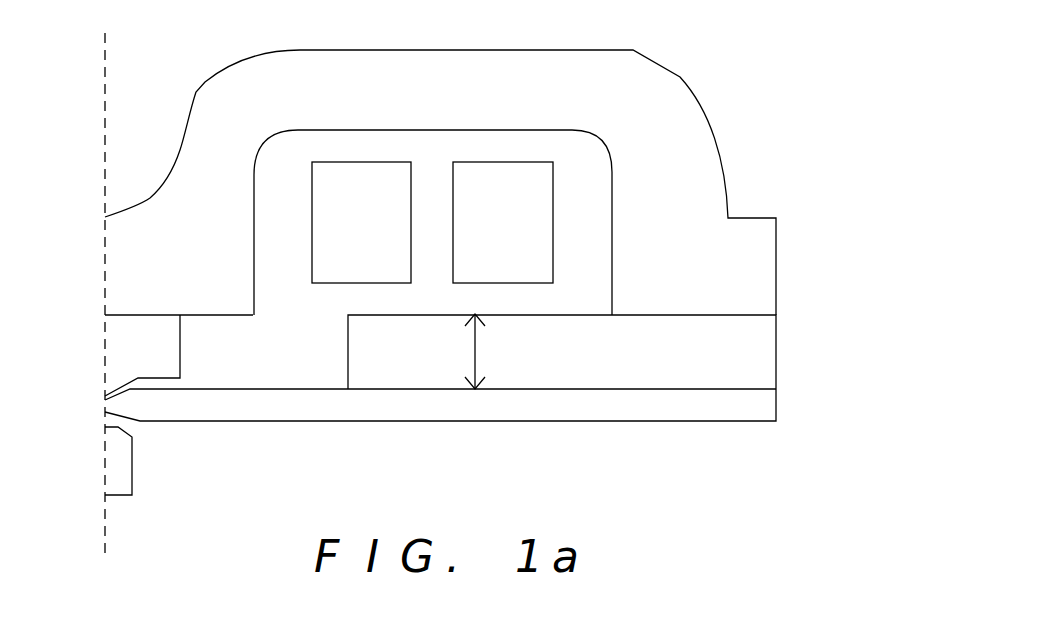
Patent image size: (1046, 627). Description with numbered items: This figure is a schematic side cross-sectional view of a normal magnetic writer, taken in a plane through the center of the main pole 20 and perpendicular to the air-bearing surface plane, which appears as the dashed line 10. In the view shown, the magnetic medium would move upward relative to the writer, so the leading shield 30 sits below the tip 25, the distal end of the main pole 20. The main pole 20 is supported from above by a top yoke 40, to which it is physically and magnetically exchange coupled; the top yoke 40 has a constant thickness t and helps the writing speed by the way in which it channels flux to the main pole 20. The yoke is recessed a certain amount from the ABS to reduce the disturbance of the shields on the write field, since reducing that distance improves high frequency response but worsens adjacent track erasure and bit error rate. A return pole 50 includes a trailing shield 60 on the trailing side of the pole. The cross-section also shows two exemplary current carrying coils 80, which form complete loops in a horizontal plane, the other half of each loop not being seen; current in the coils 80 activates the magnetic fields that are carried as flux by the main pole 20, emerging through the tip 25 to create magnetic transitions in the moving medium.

The air-bearing surface plane 10 is at (105, 125).
The main pole 20 is at (765, 408).
The tip 25 is at (105, 410).
The leading shield 30 is at (115, 468).
The top yoke 40 is at (765, 360).
The return pole 50 is at (765, 270).
The trailing shield 60 is at (118, 350).
The current carrying coils 80 is at (455, 283).
The thickness t is at (478, 352).